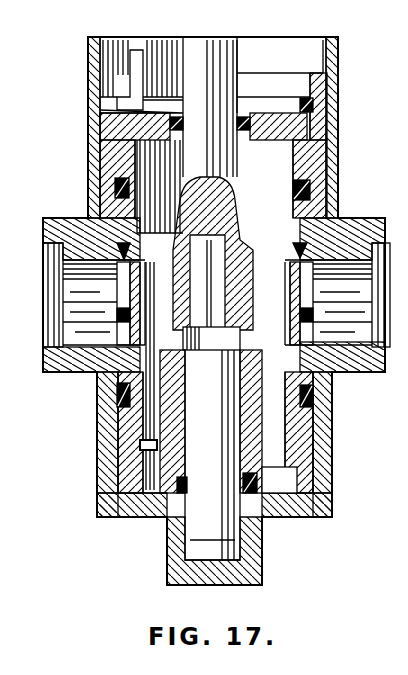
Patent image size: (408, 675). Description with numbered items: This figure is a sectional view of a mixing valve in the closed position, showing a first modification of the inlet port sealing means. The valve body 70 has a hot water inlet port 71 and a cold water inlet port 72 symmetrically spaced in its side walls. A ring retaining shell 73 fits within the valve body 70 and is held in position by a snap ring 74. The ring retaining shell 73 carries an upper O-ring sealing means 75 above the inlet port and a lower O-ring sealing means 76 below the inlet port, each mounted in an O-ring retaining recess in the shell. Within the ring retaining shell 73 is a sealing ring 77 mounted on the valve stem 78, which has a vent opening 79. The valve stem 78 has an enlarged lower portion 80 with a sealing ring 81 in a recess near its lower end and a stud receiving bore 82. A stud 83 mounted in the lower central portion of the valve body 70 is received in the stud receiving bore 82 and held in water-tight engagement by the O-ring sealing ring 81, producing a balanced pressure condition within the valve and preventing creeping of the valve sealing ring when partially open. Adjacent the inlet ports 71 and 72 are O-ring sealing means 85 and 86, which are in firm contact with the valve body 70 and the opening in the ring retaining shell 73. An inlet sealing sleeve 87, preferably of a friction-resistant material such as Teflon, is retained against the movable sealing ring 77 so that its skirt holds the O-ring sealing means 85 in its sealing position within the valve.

The valve body 70 is at (332, 84).
The hot water inlet port 71 is at (342, 298).
The cold water inlet port 72 is at (75, 298).
The ring retaining shell 73 is at (120, 130).
The snap ring 74 is at (140, 47).
The upper O-ring sealing means 75 is at (303, 188).
The lower O-ring sealing means 76 is at (332, 411).
The sealing ring 77 is at (122, 386).
The valve stem 78 is at (228, 45).
The vent opening 79 is at (216, 235).
The enlarged lower portion 80 is at (270, 508).
The sealing ring 81 is at (160, 510).
The stud receiving bore 82 is at (220, 346).
The stud 83 is at (220, 393).
The O-ring sealing means 85 is at (342, 287).
The O-ring sealing means 86 is at (92, 208).
The inlet sealing sleeve 87 is at (119, 313).